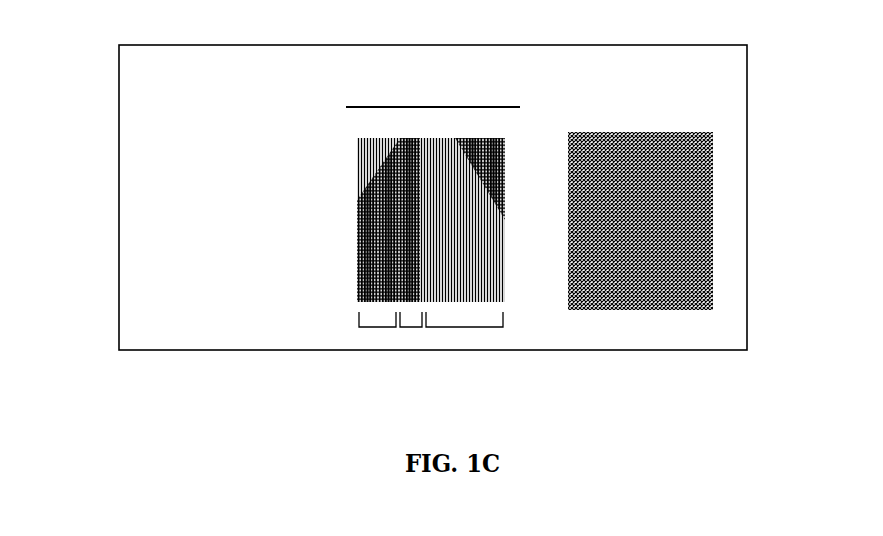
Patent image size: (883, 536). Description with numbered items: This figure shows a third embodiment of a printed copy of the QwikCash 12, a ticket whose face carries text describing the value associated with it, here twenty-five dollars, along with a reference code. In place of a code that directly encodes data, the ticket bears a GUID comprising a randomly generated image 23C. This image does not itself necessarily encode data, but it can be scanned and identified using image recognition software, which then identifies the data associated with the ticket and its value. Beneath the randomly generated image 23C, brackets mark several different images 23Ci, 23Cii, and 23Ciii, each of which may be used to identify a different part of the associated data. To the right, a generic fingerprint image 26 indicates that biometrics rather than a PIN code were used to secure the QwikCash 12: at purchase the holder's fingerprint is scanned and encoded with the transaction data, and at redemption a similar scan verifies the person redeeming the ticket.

The QwikCash 12 is at (753, 298).
The randomly generated image 23C is at (351, 148).
The generic fingerprint image 26 is at (713, 190).
The image 23Ci is at (378, 327).
The image 23Cii is at (411, 327).
The image 23Ciii is at (463, 327).